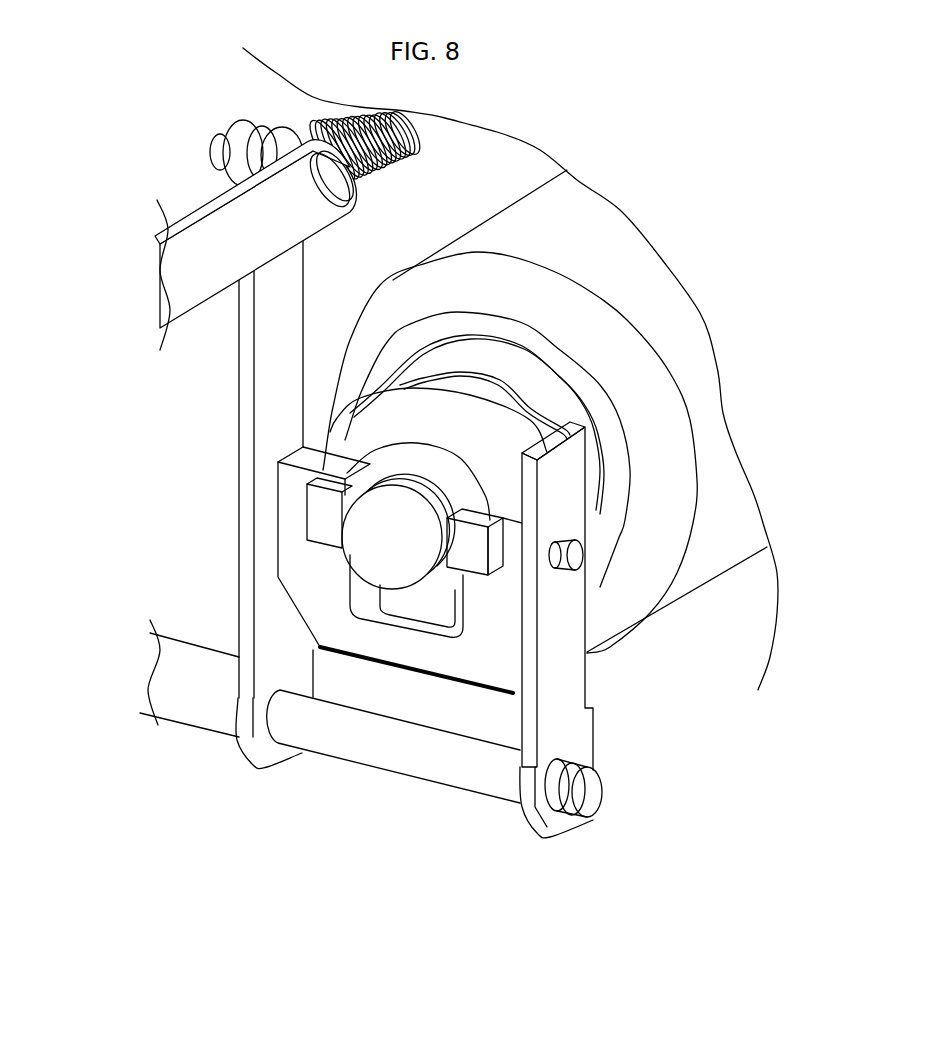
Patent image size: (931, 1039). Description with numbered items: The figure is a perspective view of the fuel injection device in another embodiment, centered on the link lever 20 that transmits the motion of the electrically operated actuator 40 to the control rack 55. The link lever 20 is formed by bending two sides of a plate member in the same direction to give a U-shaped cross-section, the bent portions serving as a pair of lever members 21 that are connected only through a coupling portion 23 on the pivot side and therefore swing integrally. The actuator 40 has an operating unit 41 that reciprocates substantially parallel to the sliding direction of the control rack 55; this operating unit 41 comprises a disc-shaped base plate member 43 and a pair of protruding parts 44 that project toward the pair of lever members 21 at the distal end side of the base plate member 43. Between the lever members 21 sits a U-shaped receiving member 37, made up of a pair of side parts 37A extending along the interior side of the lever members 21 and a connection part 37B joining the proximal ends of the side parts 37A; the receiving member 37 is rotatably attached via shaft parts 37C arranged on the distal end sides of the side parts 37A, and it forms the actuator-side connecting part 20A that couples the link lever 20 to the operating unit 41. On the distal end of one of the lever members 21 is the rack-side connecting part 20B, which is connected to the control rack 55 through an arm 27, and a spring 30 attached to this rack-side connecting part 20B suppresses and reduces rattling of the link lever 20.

The link lever 20 is at (587, 483).
The actuator-side connecting part 20A is at (387, 545).
The rack-side connecting part 20B is at (265, 117).
The lever members 21 is at (247, 372).
The coupling portion 23 is at (493, 717).
The arm 27 is at (193, 208).
The control rack 55 is at (200, 244).
The spring 30 is at (390, 167).
The receiving member 37 is at (360, 640).
The side parts 37A is at (300, 573).
The connection part 37B is at (448, 657).
The shaft parts 37C is at (578, 556).
The actuator 40 is at (387, 280).
The operating unit 41 is at (370, 520).
The base plate member 43 is at (340, 437).
The protruding parts 44 is at (320, 527).